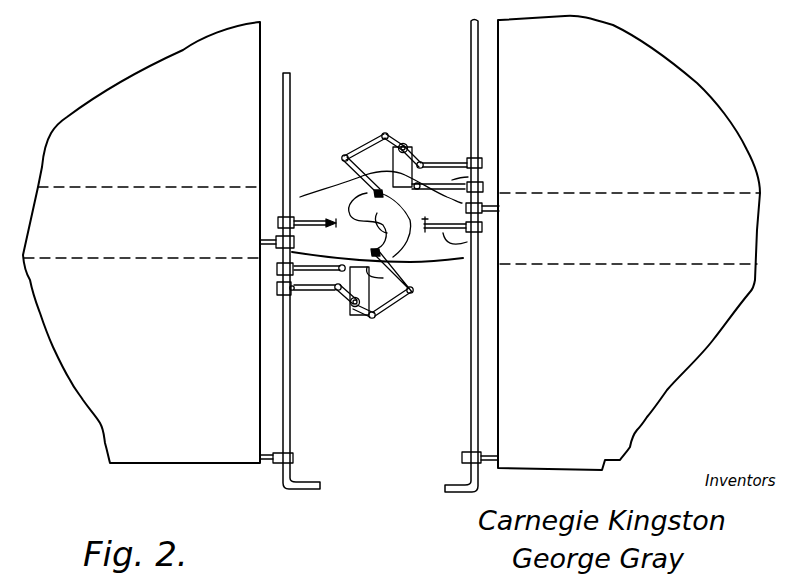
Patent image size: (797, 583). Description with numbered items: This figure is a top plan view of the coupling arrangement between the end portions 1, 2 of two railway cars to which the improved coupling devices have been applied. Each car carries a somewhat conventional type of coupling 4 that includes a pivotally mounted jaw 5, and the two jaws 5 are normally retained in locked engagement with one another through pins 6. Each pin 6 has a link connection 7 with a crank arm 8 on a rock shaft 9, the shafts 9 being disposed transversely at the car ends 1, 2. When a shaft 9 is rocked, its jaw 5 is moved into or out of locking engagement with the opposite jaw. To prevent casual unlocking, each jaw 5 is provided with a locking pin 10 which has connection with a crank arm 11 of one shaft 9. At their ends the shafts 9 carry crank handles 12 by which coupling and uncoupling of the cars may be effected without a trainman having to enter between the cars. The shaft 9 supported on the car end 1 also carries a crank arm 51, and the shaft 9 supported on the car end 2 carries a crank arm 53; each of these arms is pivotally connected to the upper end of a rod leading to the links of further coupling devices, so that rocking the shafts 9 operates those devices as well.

The end portion of railway car 1 is at (200, 56).
The end portion of railway car 2 is at (625, 43).
The coupling 4 is at (456, 246).
The jaw 5 is at (360, 210).
The pin 6 is at (390, 192).
The link connection 7 is at (373, 137).
The crank arm 8 is at (438, 158).
The rock shaft 9 is at (291, 400).
The locking pin 10 is at (427, 245).
The crank arm 11 is at (305, 227).
The crank handle 12 is at (303, 489).
The crank arm 51 is at (322, 272).
The crank arm 53 is at (450, 182).